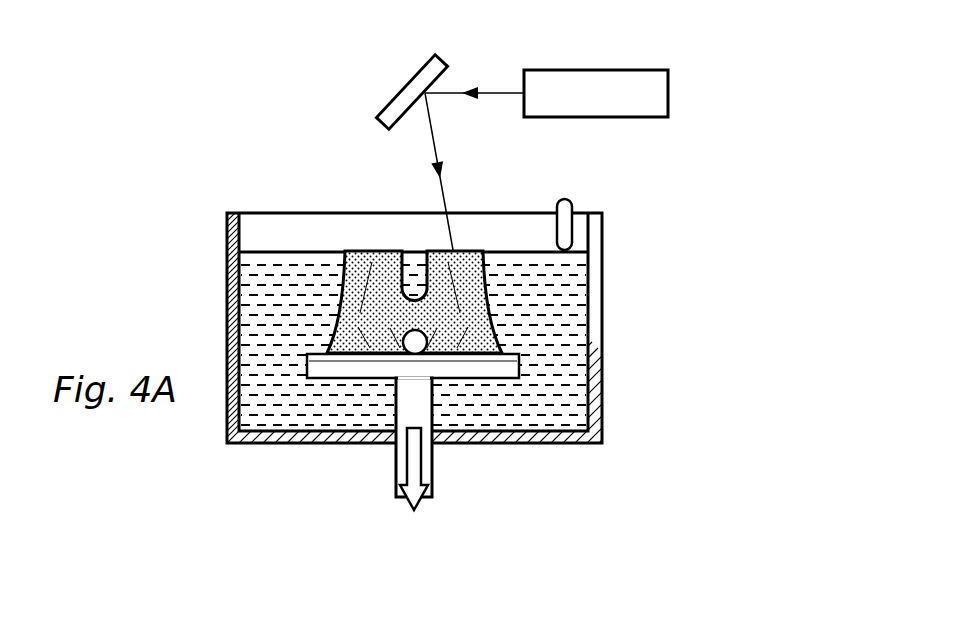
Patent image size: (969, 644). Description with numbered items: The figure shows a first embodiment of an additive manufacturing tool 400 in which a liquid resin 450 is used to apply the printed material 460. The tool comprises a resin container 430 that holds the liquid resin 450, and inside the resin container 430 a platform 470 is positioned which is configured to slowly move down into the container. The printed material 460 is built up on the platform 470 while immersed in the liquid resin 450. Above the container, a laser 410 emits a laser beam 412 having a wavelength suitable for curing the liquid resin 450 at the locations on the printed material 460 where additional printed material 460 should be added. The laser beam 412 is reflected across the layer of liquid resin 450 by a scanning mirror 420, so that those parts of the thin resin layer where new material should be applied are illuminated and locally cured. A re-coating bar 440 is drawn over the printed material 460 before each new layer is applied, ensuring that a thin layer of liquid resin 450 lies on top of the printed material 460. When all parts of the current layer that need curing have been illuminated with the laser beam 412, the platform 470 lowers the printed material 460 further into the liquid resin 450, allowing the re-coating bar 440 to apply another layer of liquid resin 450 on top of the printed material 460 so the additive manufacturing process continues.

The additive manufacturing tool 400 is at (200, 124).
The laser 410 is at (598, 87).
The laser beam 412 is at (445, 192).
The scanning mirror 420 is at (411, 90).
The resin container 430 is at (594, 320).
The re-coating bar 440 is at (577, 225).
The liquid resin 450 is at (287, 270).
The printed material 460 is at (377, 270).
The platform 470 is at (518, 370).